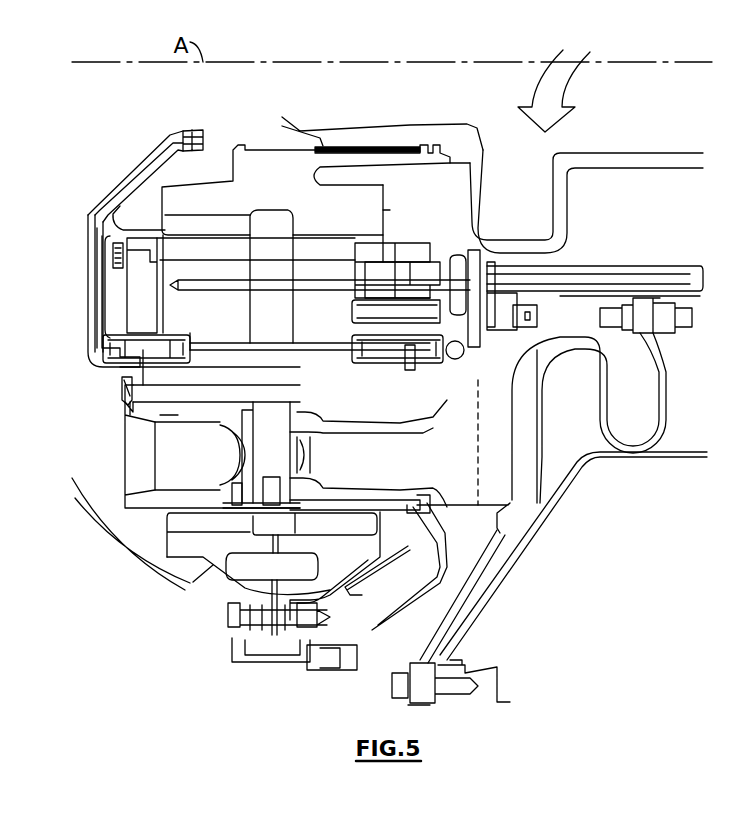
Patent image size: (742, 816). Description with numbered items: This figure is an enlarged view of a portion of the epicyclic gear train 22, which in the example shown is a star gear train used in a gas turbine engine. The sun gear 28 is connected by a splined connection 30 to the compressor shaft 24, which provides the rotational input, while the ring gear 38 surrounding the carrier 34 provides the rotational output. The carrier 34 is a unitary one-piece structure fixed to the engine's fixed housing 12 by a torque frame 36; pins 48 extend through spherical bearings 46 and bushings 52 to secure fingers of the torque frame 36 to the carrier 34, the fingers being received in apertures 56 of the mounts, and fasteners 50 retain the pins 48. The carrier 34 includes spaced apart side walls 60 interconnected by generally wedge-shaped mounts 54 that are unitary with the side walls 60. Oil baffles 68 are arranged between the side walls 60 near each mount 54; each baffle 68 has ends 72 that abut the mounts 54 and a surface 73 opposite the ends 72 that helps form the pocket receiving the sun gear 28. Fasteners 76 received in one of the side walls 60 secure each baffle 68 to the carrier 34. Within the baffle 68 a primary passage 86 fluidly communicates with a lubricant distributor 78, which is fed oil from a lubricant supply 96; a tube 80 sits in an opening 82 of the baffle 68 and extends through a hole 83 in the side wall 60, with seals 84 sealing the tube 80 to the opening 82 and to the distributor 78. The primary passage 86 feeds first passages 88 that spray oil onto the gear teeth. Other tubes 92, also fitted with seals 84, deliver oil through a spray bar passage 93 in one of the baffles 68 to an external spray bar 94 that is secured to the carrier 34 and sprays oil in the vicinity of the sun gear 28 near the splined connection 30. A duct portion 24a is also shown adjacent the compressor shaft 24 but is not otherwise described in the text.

The fixed housing 12 is at (598, 385).
The epicyclic gear train 22 is at (384, 96).
The compressor shaft 24 is at (428, 130).
The duct pipe 24a is at (650, 160).
The sun gear 28 is at (303, 188).
The splined connection 30 is at (353, 146).
The carrier 34 is at (138, 512).
The torque frame 36 is at (439, 477).
The ring gear 38 is at (207, 577).
The spherical bearings 46 is at (297, 460).
The pins 48 is at (290, 420).
The fasteners 50 is at (120, 415).
The bushings 52 is at (232, 470).
The mounts 54 is at (150, 463).
The apertures 56 is at (192, 477).
The side walls 60 is at (127, 290).
The oil baffles 68 is at (233, 316).
The ends 72 is at (306, 343).
The surface 73 is at (272, 235).
The fasteners 76 is at (395, 240).
The lubricant distributor 78 is at (465, 328).
The tube 80 is at (440, 265).
The openings 82 is at (360, 296).
The hole 83 is at (372, 262).
The seals 84 is at (113, 336).
The primary passage 86 is at (262, 278).
The first passages 88 is at (226, 246).
The tubes 92 is at (120, 383).
The spray bar passage 93 is at (190, 343).
The external spray bar 94 is at (90, 300).
The lubricant supply 96 is at (468, 350).